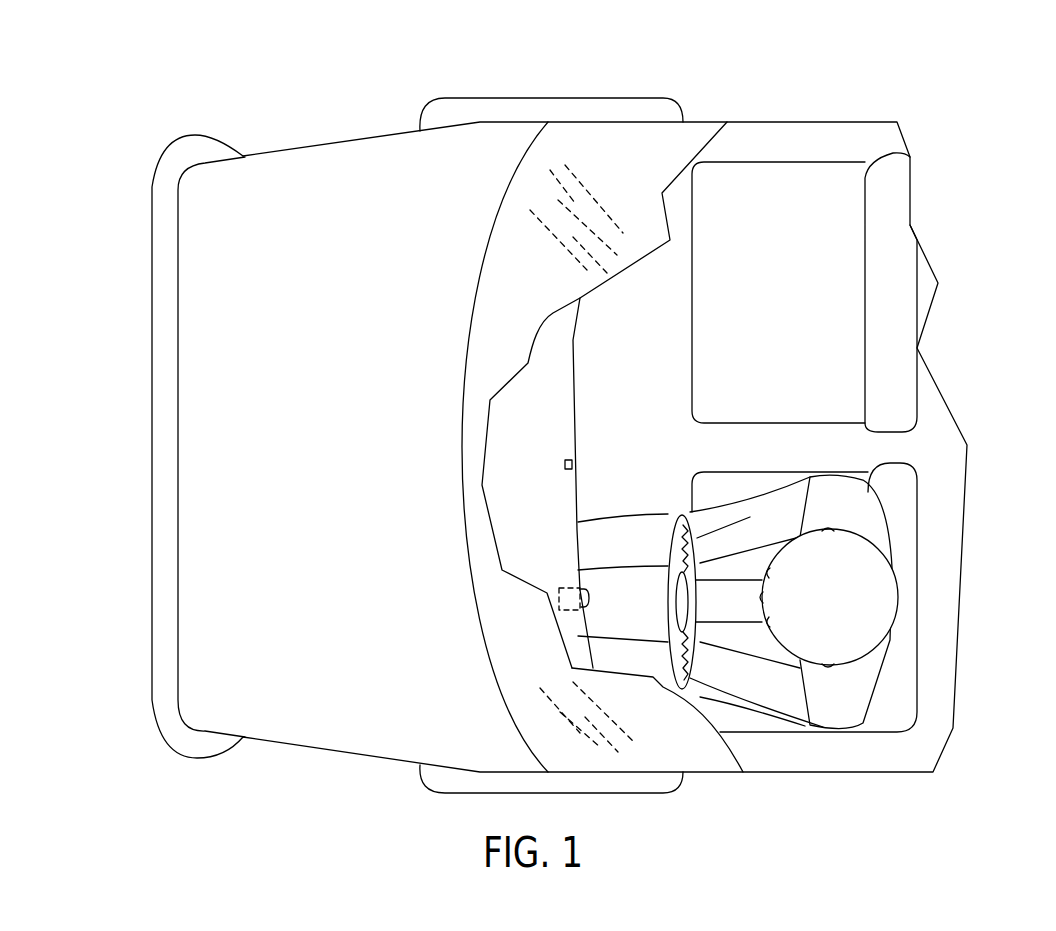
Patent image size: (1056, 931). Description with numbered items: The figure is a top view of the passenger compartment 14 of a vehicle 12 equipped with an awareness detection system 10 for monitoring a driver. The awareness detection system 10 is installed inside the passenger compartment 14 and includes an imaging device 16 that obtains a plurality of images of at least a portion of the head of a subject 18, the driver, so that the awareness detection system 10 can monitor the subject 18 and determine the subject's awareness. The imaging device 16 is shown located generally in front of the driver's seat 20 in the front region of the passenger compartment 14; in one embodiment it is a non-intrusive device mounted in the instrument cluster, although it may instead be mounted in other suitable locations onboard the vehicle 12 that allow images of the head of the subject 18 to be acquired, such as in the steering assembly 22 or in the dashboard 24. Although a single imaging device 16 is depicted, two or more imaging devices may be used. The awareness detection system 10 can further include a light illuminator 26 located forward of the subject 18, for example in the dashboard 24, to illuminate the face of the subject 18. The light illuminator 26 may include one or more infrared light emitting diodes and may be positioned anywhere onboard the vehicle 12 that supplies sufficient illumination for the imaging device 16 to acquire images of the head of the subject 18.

The awareness detection system 10 is at (224, 79).
The vehicle 12 is at (305, 142).
The passenger compartment 14 is at (663, 282).
The imaging device 16 is at (573, 588).
The subject 18 is at (863, 537).
The driver's seat 20 is at (918, 607).
The steering assembly 22 is at (680, 523).
The dashboard 24 is at (578, 328).
The light illuminator 26 is at (573, 463).